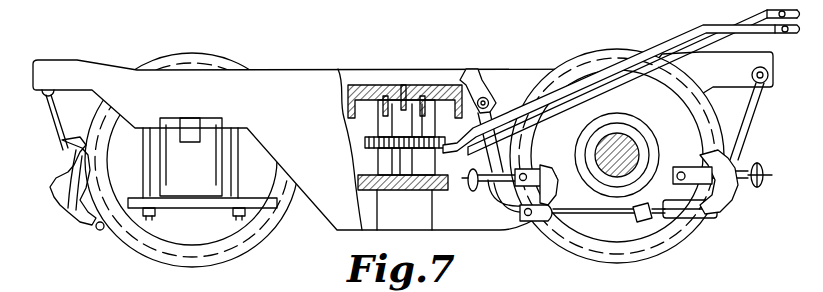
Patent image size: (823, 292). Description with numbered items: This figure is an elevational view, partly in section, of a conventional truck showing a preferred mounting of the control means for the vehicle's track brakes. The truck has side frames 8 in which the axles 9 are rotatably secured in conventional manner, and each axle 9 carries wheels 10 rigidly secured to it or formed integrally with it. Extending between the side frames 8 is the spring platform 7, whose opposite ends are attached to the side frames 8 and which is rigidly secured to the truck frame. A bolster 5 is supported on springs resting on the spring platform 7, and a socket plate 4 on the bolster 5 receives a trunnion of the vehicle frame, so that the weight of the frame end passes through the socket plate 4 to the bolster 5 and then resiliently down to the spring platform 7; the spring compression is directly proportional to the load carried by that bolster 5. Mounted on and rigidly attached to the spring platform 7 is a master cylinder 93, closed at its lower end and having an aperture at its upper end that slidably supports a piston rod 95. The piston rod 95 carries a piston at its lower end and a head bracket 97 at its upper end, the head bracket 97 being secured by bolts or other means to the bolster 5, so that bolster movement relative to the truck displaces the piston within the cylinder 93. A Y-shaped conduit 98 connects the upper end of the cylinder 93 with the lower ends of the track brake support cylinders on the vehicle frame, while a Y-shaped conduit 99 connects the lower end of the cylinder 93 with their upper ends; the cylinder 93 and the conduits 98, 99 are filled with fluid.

The socket plate 4 is at (378, 98).
The bolster 5 is at (430, 99).
The spring platform 7 is at (448, 188).
The side frame 8 is at (540, 76).
The axle 9 is at (632, 146).
The wheel 10 is at (238, 247).
The cylinder 93 is at (388, 162).
The piston rod 95 is at (372, 127).
The head bracket 97 is at (418, 96).
The Y-shaped conduit 98 is at (508, 118).
The Y-shaped conduit 99 is at (757, 17).